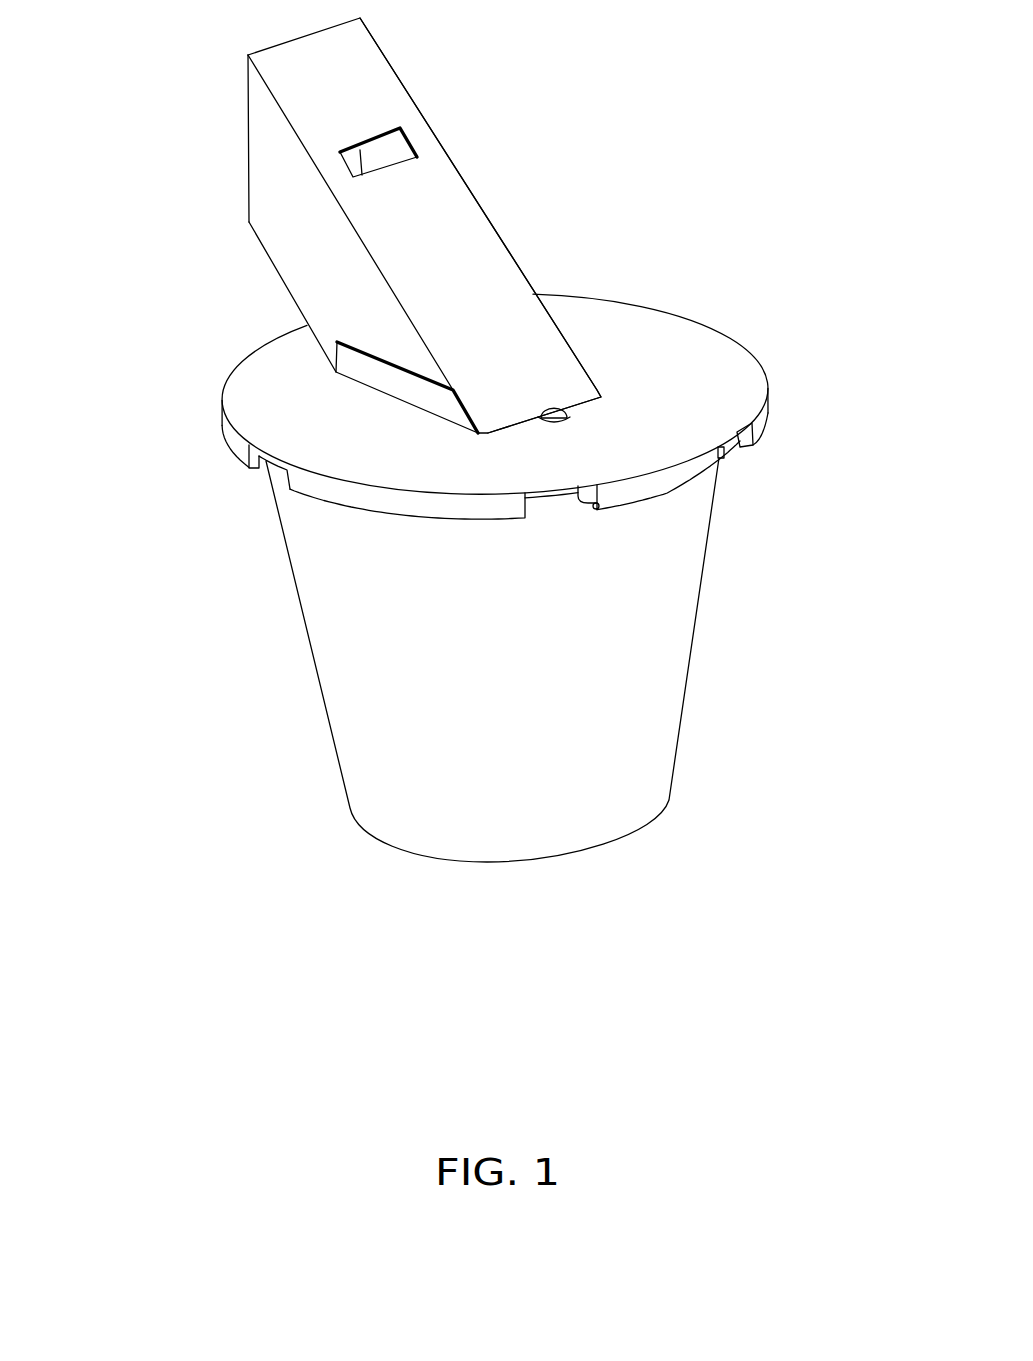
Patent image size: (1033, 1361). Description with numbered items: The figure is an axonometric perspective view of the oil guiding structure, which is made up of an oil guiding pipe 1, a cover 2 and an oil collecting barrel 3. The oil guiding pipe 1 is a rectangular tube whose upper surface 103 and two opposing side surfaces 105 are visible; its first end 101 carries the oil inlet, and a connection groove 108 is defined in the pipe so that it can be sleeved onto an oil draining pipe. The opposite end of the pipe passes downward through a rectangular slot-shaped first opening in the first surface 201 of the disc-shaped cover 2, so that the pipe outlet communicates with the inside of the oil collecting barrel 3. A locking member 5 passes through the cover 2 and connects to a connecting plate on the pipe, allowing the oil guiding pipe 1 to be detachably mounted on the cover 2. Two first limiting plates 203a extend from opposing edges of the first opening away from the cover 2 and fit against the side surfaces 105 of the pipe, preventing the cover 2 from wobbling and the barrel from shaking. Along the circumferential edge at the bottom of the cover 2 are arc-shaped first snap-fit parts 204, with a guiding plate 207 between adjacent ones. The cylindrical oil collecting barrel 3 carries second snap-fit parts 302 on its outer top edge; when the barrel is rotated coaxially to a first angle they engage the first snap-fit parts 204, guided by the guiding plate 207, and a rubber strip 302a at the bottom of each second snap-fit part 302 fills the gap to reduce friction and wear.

The oil guiding pipe 1 is at (359, 216).
The side edge of box 101 is at (228, 146).
The upper surface 103 is at (490, 236).
The side surfaces 105 is at (276, 222).
The connection groove 108 is at (398, 138).
The cover 2 is at (540, 383).
The first surface 201 is at (747, 352).
The first limiting plates 203a is at (352, 386).
The first snap-fit parts 204 is at (766, 436).
The guiding plate 207 is at (677, 491).
The locking member 5 is at (552, 408).
The oil collecting barrel 3 is at (377, 682).
The second snap-fit parts 302 is at (234, 471).
The rubber strip 302a is at (601, 530).